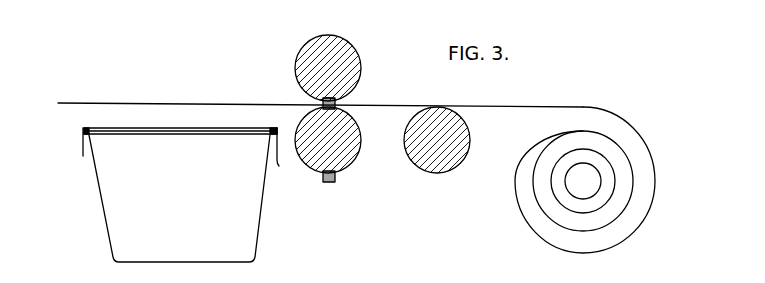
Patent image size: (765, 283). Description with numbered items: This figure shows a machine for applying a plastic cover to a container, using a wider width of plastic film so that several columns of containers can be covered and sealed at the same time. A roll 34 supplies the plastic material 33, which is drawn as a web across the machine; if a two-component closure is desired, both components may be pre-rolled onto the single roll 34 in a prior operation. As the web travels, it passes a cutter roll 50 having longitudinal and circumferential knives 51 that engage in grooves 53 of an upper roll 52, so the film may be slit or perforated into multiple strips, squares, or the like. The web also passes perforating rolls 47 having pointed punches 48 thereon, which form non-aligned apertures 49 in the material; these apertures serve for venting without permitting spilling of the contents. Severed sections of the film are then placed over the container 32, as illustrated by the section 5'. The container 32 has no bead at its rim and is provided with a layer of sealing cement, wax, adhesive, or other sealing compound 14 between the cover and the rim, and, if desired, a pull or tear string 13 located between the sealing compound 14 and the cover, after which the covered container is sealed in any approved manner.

The plastic material 33 is at (132, 102).
The roll of plastic material 34 is at (651, 168).
The container 32 is at (208, 224).
The pull or tear string 13 is at (86, 166).
The sealing compound 14 is at (89, 128).
The apertures 49 is at (180, 136).
The cover section 5' is at (180, 152).
The upper roll 52 is at (346, 50).
The cutter roll 50 is at (309, 168).
The perforating rolls 47 is at (445, 172).
The longitudinal and circumferential knives 51 is at (341, 104).
The grooves 53 is at (316, 98).
The pointed punches 48 is at (403, 135).